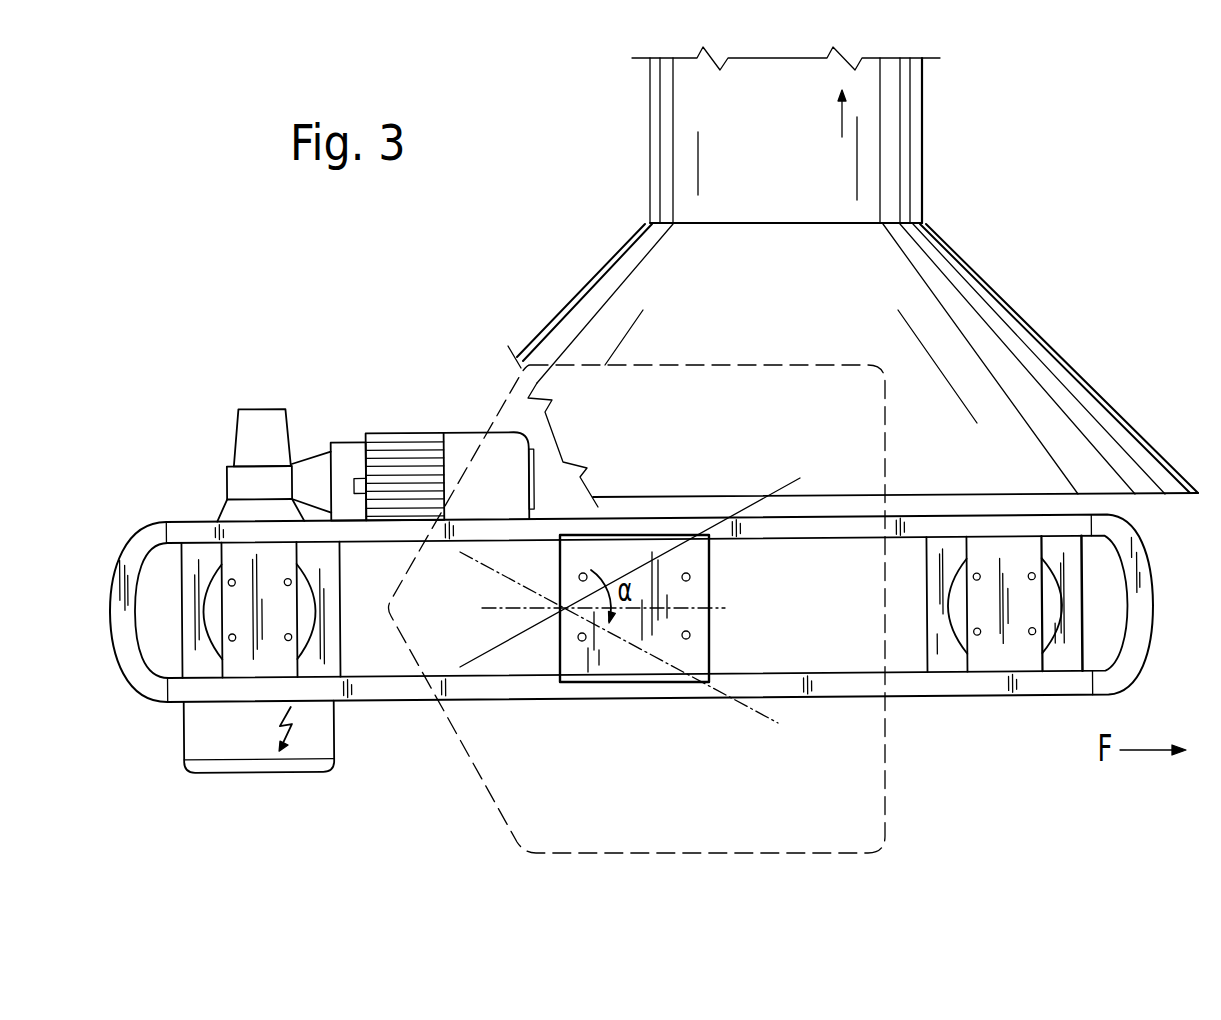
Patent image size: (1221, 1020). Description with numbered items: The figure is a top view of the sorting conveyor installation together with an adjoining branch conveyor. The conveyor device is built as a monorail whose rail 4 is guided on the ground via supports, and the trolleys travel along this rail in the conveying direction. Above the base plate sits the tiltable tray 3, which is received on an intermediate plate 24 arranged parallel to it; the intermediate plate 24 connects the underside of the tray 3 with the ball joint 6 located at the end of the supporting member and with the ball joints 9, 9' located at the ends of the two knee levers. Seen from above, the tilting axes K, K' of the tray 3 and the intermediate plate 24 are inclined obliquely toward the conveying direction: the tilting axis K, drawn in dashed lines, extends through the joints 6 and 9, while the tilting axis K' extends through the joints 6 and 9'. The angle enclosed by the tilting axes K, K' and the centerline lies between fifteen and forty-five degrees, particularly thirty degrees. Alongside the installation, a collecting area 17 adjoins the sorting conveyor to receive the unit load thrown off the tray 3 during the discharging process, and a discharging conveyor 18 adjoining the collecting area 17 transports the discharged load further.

The tiltable tray 3 is at (938, 742).
The rail 4 is at (1158, 414).
The ball joint 6 is at (558, 755).
The ball joint 9 is at (630, 531).
The ball joint 9' is at (619, 670).
The collecting area 17 is at (1060, 322).
The discharging conveyor 18 is at (968, 166).
The intermediate plate 24 is at (765, 642).
The tilting axis K is at (664, 476).
The tilting axis K' is at (655, 734).